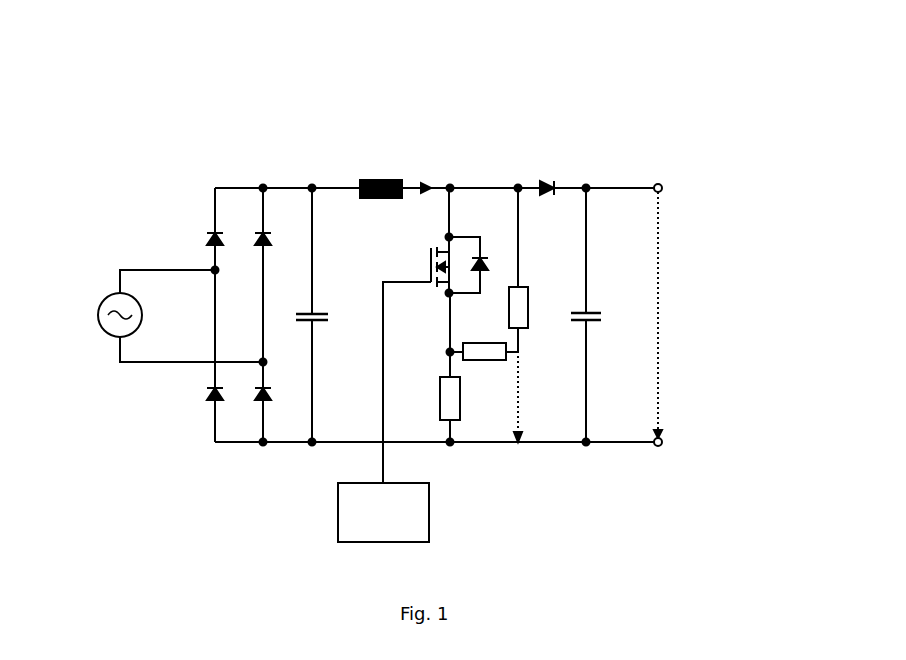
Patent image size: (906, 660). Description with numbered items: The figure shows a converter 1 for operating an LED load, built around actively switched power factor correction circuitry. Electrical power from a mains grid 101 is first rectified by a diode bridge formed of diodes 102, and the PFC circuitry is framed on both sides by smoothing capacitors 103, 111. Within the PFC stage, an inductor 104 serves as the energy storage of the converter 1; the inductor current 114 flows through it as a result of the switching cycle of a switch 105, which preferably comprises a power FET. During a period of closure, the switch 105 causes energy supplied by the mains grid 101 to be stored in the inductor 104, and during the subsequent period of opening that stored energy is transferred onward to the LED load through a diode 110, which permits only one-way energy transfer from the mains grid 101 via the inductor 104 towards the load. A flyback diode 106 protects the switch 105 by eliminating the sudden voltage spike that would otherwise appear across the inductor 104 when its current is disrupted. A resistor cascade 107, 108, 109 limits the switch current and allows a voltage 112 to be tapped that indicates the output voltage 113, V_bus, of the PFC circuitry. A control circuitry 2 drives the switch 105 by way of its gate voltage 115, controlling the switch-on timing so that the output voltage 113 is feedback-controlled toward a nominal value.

The converter 1 is at (547, 36).
The control circuitry 2 is at (383, 512).
The mains grid 101 is at (118, 291).
The diodes 102 is at (217, 231).
The smoothing capacitor 103 is at (314, 308).
The inductor 104 is at (376, 179).
The switch 105 is at (441, 252).
The flyback diode 106 is at (481, 253).
The resistor of the resistor cascade 107 is at (519, 286).
The resistor of the resistor cascade 108 is at (468, 343).
The resistor of the resistor cascade 109 is at (444, 376).
The diode 110 is at (547, 181).
The smoothing capacitor 111 is at (588, 312).
The voltage 112 is at (503, 399).
The output voltage 113 is at (699, 315).
The inductor current 114 is at (425, 182).
The gate voltage 115 is at (397, 264).